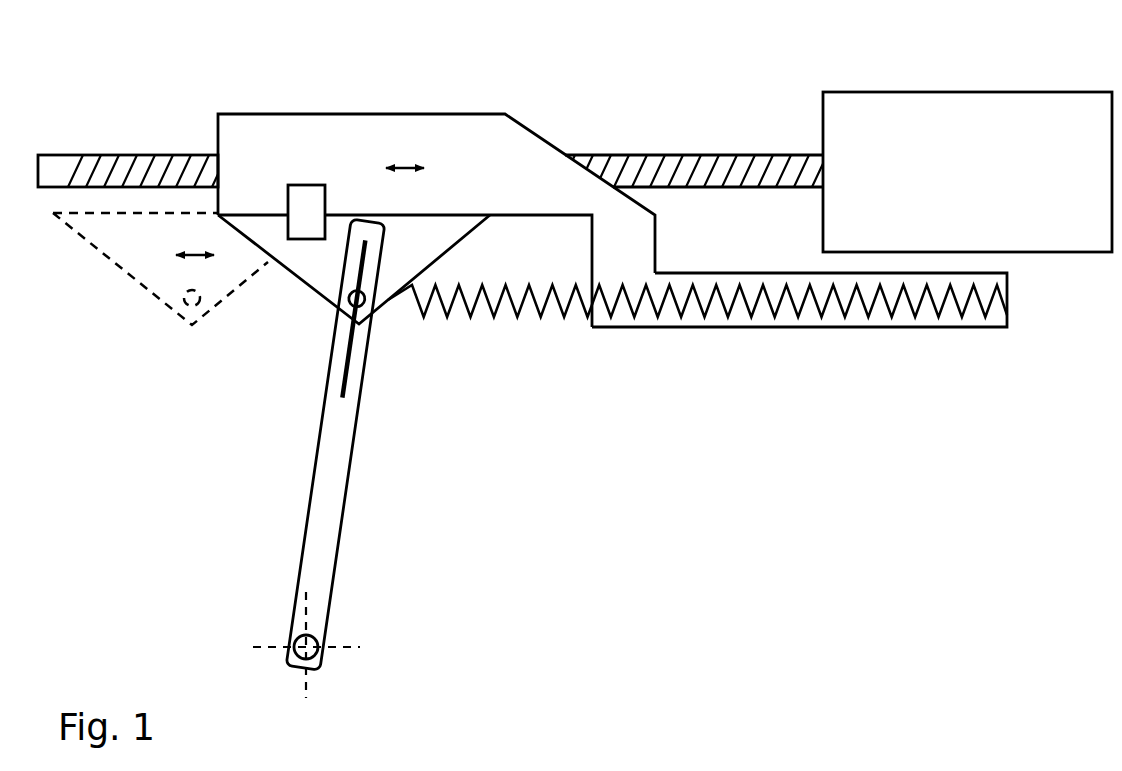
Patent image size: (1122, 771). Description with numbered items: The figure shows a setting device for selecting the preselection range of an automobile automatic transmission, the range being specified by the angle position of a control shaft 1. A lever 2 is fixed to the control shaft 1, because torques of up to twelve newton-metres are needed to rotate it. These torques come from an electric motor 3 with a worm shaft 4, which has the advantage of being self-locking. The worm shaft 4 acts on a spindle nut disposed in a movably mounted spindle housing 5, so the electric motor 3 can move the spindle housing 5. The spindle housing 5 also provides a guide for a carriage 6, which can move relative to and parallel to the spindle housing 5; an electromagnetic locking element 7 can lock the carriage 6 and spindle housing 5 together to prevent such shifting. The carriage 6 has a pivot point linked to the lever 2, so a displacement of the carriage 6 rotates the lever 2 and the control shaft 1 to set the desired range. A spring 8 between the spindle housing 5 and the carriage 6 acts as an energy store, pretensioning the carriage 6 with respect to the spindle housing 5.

The control shaft 1 is at (292, 633).
The lever 2 is at (317, 530).
The electric motor 3 is at (870, 105).
The worm shaft 4 is at (640, 168).
The spindle housing 5 is at (510, 145).
The carriage 6 is at (125, 243).
The electromagnetic locking element 7 is at (308, 197).
The spring 8 is at (472, 308).